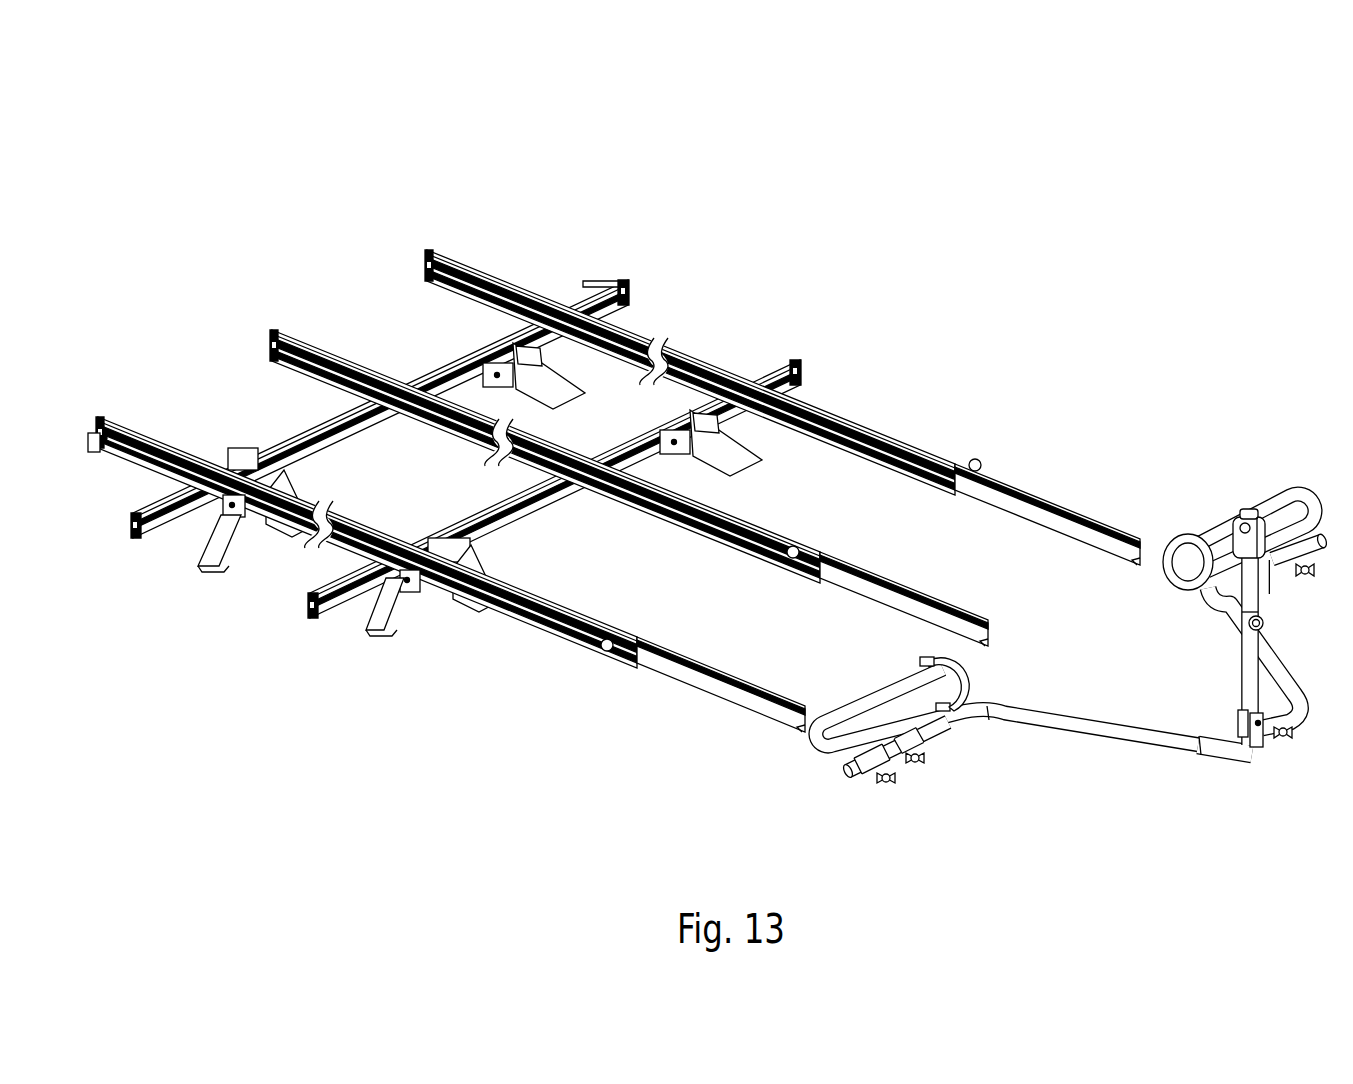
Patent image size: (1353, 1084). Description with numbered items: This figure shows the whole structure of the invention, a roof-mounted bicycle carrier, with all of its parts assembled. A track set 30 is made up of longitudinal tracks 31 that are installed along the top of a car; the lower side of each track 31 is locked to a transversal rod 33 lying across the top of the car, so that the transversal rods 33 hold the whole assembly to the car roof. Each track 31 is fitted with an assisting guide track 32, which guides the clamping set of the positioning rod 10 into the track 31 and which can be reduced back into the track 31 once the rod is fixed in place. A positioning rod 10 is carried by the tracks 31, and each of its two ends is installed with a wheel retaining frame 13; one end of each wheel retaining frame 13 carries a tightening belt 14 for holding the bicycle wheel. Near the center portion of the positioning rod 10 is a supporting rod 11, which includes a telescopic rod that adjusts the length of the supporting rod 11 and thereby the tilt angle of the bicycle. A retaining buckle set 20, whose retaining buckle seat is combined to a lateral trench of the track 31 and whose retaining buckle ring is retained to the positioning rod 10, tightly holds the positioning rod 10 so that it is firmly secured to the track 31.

The positioning rod 10 is at (1082, 732).
The supporting rod 11 is at (1248, 668).
The wheel retaining frame 13 is at (818, 742).
The tightening belt 14 is at (957, 681).
The retaining buckle set 20 is at (105, 445).
The track set 30 is at (618, 404).
The track 31 is at (513, 283).
The assisting guide track 32 is at (870, 563).
The transversal rod 33 is at (612, 283).